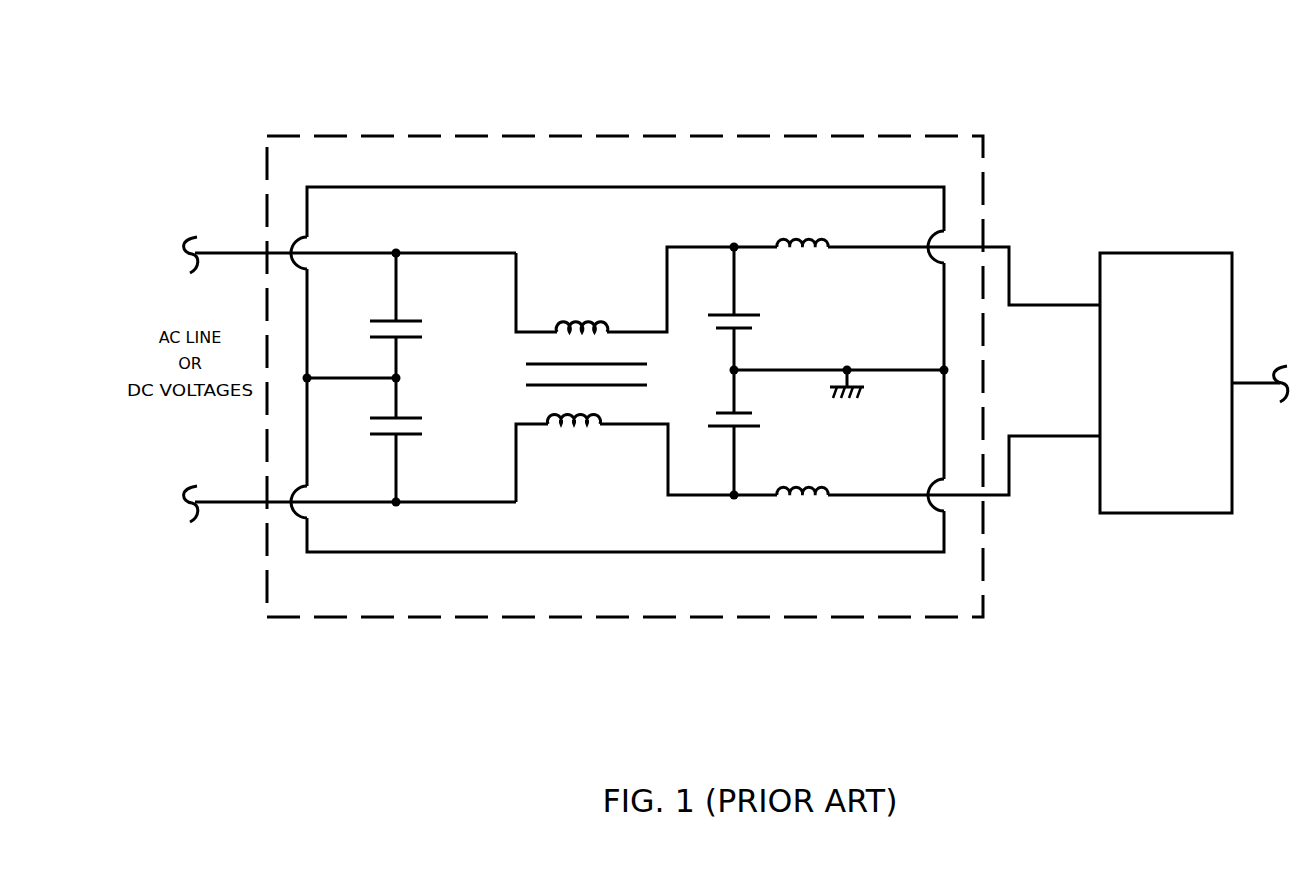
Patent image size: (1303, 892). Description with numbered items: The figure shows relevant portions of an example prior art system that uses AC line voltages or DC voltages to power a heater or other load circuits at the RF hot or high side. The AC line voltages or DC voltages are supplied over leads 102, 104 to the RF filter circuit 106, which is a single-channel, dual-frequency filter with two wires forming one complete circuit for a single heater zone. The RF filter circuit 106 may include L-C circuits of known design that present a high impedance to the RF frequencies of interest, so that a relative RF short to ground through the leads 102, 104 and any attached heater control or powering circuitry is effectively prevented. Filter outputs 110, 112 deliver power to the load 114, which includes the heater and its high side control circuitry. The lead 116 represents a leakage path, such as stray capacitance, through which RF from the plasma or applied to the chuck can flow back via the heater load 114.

The lead 102 is at (216, 505).
The lead 104 is at (228, 253).
The RF filter circuit 106 is at (536, 135).
The filter output 110 is at (1050, 305).
The filter output 112 is at (1045, 437).
The load 114 is at (1166, 383).
The lead 116 is at (1248, 382).